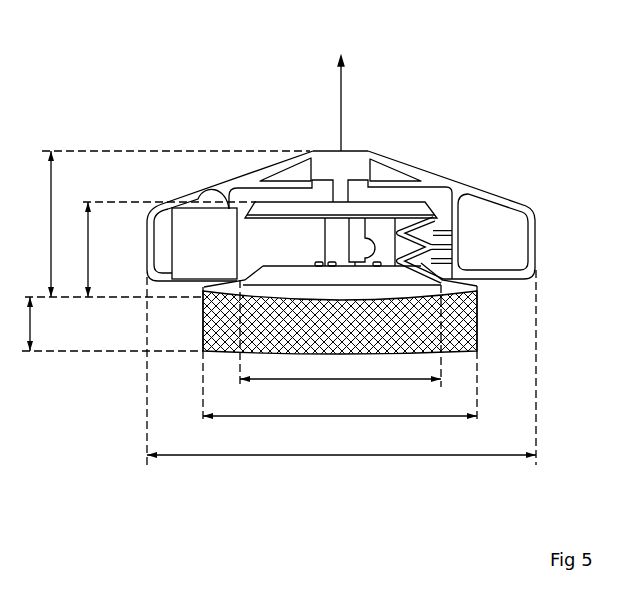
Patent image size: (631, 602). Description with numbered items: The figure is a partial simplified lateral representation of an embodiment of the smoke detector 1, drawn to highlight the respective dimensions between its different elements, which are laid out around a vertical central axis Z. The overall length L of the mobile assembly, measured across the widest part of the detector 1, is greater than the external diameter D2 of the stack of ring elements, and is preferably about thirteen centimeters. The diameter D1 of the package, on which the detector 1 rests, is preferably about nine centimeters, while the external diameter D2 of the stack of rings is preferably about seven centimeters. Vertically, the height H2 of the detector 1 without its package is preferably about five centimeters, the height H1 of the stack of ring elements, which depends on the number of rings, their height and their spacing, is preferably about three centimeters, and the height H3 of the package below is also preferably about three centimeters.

The smoke detector 1 is at (503, 112).
The central axis Z is at (341, 94).
The height of the stack of elements H1 is at (160, 249).
The height of detector H2 is at (167, 224).
The height of package H3 is at (112, 324).
The diameter of package D1 is at (340, 387).
The external diameter of the stack of elements D2 is at (340, 333).
The length of mobile assembly L is at (341, 367).